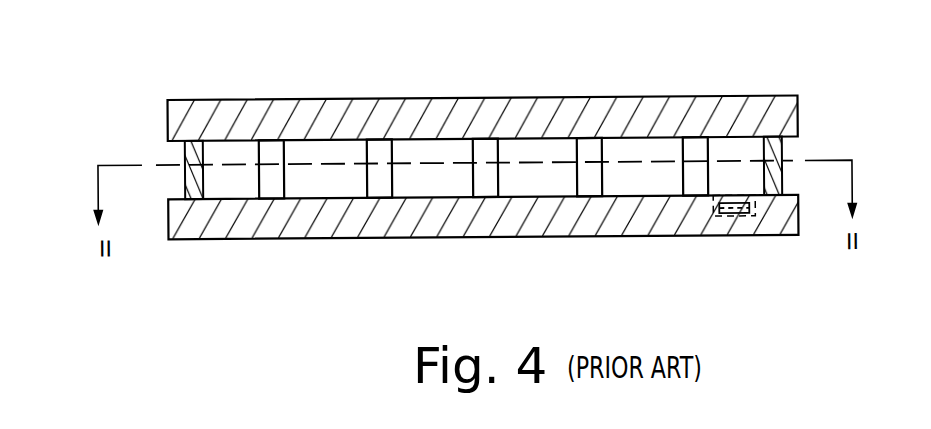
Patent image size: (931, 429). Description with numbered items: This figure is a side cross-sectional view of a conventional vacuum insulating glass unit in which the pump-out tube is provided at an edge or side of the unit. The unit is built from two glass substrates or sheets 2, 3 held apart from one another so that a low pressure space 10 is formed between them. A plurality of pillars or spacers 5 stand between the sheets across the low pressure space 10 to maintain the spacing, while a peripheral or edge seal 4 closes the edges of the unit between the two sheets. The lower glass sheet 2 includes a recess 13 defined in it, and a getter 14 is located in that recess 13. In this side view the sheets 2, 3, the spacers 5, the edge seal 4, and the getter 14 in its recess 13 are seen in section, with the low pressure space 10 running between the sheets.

The glass substrate 2 is at (547, 216).
The glass substrate 3 is at (527, 119).
The peripheral edge seal 4 is at (183, 157).
The pillar/spacer 5 is at (269, 159).
The low pressure space 10 is at (638, 177).
The recess 13 is at (721, 225).
The getter 14 is at (742, 224).